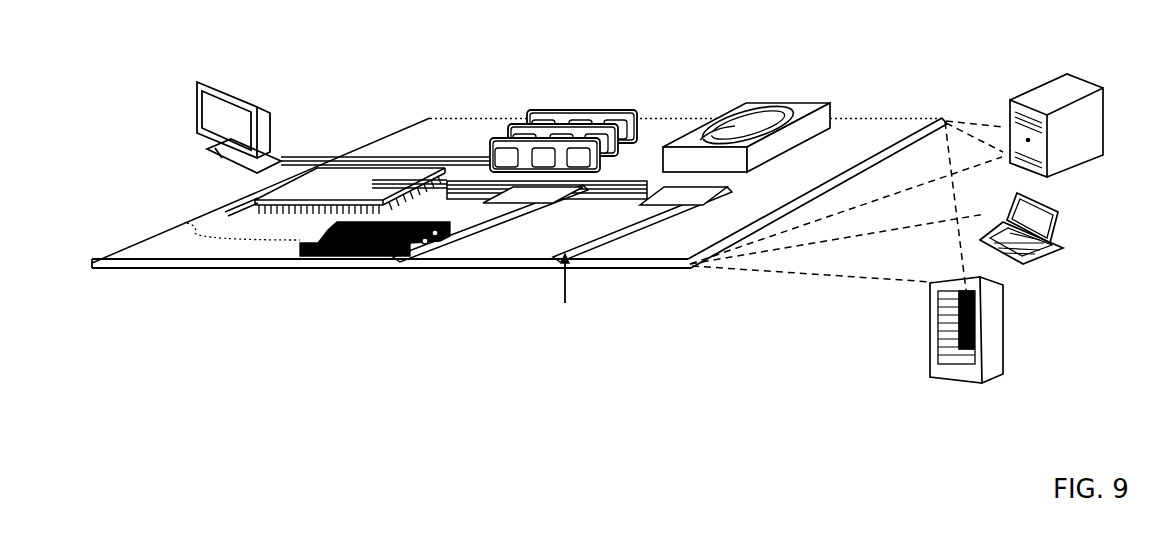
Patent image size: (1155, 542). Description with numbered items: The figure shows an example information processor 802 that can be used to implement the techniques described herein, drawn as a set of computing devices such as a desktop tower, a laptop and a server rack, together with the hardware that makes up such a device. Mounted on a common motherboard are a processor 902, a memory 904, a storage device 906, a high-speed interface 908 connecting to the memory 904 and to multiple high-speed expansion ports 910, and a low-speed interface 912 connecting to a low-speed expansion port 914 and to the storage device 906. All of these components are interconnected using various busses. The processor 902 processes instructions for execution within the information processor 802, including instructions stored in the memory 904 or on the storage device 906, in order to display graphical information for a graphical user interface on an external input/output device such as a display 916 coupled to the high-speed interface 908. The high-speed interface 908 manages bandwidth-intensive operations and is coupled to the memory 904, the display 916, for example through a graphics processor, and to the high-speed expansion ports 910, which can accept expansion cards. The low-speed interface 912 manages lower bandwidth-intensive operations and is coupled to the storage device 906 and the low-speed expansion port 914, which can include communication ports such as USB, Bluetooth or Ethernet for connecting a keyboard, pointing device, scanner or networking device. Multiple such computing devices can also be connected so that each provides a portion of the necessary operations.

The information processor 802 is at (1005, 104).
The processor 902 is at (220, 200).
The memory 904 is at (545, 104).
The storage device 906 is at (732, 100).
The high-speed interface 908 is at (457, 167).
The high-speed expansion ports 910 is at (187, 223).
The low-speed interface 912 is at (657, 188).
The low-speed expansion port 914 is at (608, 270).
The display 916 is at (192, 80).